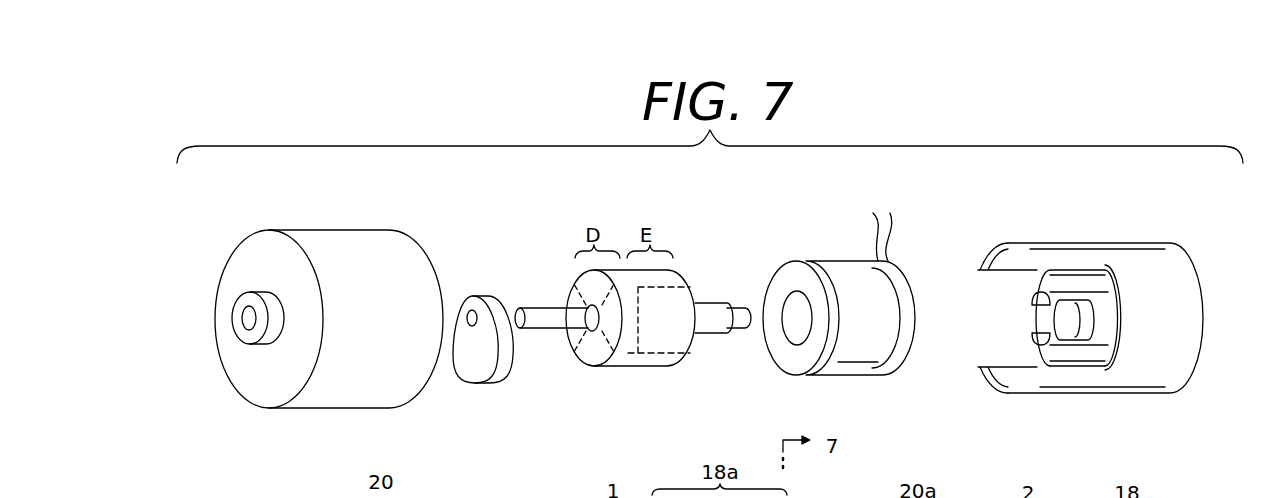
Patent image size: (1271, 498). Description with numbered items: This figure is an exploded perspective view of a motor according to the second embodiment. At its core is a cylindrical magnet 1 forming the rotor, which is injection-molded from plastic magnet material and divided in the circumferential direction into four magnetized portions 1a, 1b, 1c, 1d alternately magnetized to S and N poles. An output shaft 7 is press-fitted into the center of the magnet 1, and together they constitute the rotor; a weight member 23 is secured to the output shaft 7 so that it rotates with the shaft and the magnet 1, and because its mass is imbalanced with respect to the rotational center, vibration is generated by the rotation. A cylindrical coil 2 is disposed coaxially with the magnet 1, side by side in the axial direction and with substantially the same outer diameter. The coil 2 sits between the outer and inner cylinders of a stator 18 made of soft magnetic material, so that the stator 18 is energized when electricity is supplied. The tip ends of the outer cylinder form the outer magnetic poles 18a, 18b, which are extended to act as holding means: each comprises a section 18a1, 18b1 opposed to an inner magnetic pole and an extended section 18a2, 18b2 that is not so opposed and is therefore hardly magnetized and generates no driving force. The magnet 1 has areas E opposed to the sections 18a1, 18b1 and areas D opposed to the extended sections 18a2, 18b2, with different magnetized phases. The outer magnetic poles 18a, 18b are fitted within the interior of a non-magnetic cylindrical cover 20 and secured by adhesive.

The magnet 1 is at (604, 369).
The magnetized portion 1a is at (675, 278).
The magnetized portion 1b is at (676, 345).
The magnetized portion 1c is at (636, 365).
The magnetized portion 1d is at (568, 338).
The coil 2 is at (841, 261).
The output shaft 7 is at (717, 327).
The stator 18 is at (1077, 314).
The outer magnetic pole 18a is at (1066, 243).
The section 18a1 is at (1115, 243).
The extended section 18a2 is at (1012, 243).
The outer magnetic pole 18b is at (1045, 395).
The section 18b1 is at (1085, 395).
The extended section 18b2 is at (1007, 395).
The cover 20 is at (379, 231).
The weight member 23 is at (493, 386).